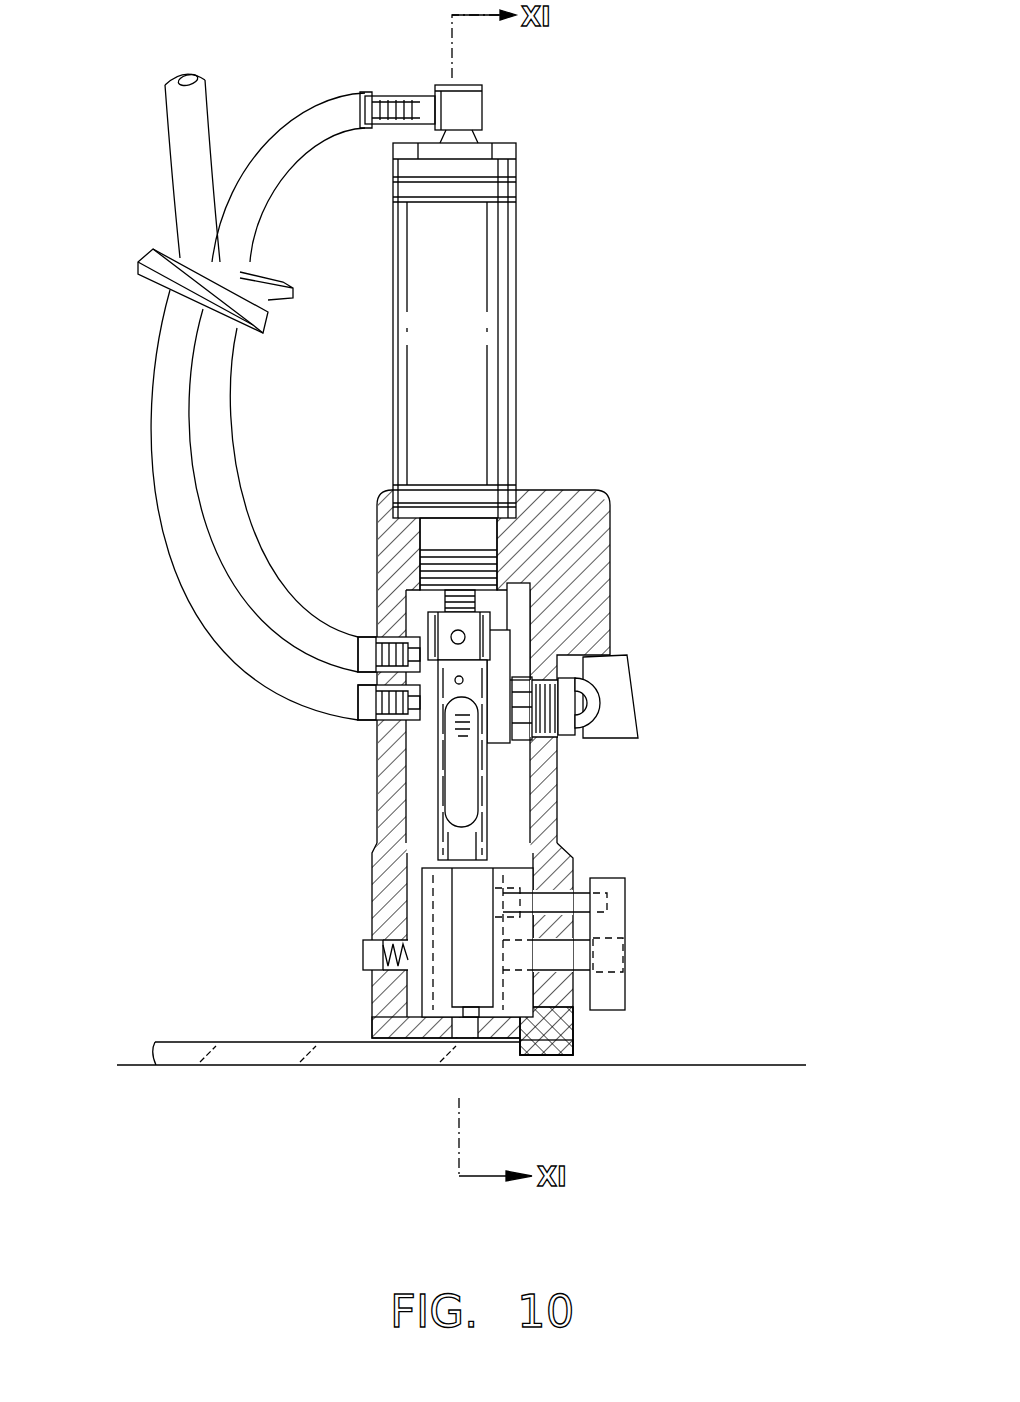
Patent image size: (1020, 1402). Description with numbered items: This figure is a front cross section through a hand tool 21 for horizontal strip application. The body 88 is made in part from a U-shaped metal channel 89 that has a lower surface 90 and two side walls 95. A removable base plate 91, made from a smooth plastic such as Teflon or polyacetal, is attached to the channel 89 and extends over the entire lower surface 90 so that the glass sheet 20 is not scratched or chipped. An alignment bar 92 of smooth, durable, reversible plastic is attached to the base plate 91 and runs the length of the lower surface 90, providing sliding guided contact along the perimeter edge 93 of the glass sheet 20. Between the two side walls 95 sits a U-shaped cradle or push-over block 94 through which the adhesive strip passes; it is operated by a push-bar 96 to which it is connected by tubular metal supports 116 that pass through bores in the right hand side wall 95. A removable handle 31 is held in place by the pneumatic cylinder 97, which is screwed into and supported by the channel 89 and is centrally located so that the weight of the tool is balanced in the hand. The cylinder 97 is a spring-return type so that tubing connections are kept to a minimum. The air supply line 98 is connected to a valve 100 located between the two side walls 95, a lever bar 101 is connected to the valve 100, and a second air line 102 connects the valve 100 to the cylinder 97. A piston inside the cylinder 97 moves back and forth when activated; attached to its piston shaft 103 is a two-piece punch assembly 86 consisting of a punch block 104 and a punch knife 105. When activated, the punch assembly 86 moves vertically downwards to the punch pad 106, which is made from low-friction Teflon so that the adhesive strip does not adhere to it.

The glass sheet 20 is at (247, 1058).
The hand tool 21 is at (540, 633).
The removable handle 31 is at (548, 494).
The punch assembly 86 is at (460, 797).
The body 88 is at (512, 607).
The U-shaped metal channel 89 is at (522, 566).
The lower surface 90 is at (436, 1032).
The base plate 91 is at (388, 1022).
The alignment bar 92 is at (533, 1041).
The perimeter edge 93 is at (520, 1060).
The push-over block 94 is at (512, 895).
The side walls 95 is at (548, 792).
The push-bar 96 is at (612, 964).
The pneumatic cylinder 97 is at (470, 230).
The air supply line 98 is at (272, 682).
The valve 100 is at (522, 673).
The lever bar 101 is at (625, 706).
The second air line 102 is at (258, 203).
The piston shaft 103 is at (440, 598).
The punch block 104 is at (432, 622).
The punch knife 105 is at (460, 838).
The punch pad 106 is at (470, 1017).
The tubular metal supports 116 is at (600, 902).